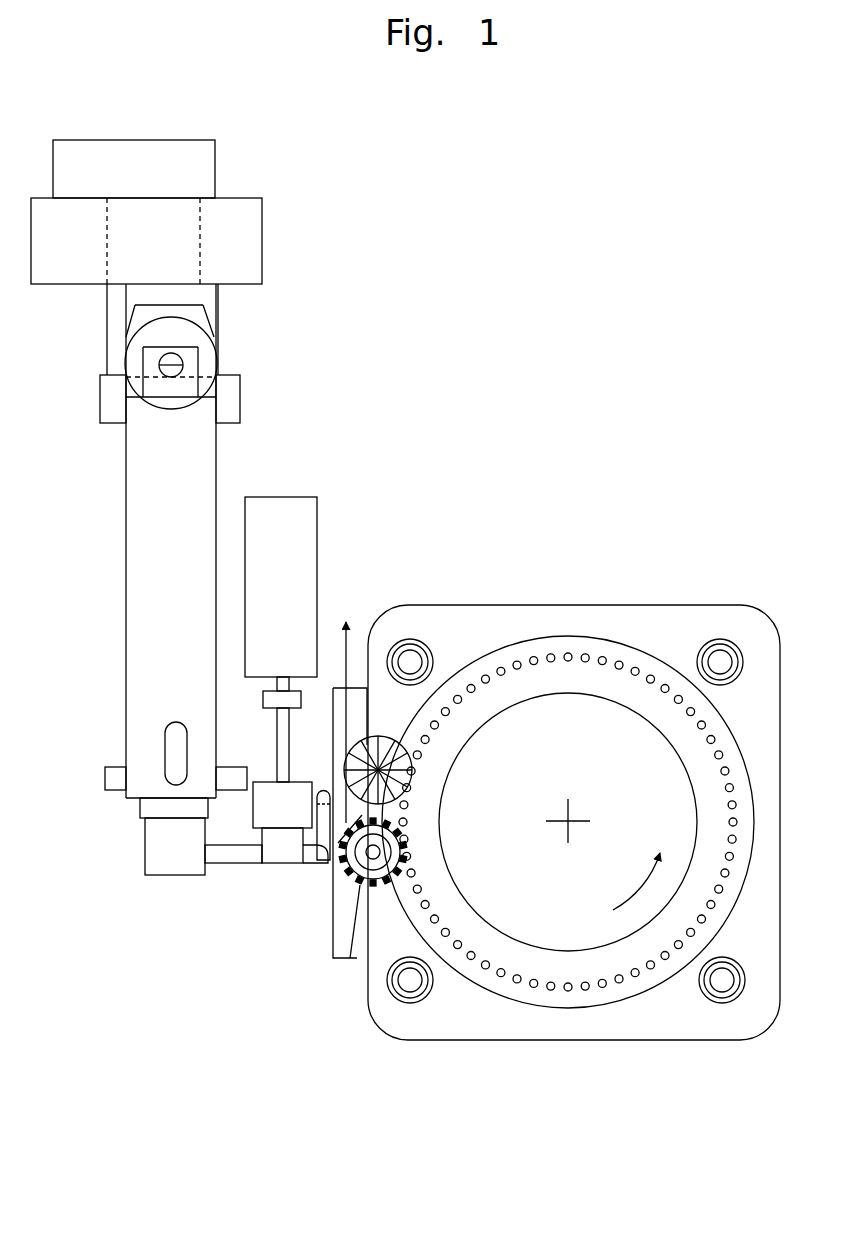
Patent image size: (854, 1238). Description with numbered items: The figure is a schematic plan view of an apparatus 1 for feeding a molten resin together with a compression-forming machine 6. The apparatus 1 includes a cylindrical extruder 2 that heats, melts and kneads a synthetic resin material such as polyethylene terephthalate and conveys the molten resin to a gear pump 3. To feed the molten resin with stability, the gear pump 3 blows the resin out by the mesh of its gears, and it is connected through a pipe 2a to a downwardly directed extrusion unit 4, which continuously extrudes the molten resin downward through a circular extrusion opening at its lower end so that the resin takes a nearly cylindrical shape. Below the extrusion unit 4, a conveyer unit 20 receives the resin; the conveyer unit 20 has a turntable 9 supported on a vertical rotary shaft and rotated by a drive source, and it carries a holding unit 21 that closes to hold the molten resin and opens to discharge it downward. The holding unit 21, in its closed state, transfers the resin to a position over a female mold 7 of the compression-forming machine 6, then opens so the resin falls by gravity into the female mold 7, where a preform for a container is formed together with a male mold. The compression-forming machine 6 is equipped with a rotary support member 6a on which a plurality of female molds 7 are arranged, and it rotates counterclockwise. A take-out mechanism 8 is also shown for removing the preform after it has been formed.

The apparatus for feeding a molten resin 1 is at (356, 455).
The extruder 2 is at (118, 585).
The pipe 2a is at (318, 868).
The gear pump 3 is at (262, 868).
The extrusion unit 4 is at (322, 784).
The compression-forming machine 6 is at (676, 644).
The rotary support member 6a is at (592, 635).
The female mold 7 is at (422, 813).
The take-out mechanism 8 is at (378, 732).
The turntable 9 is at (350, 958).
The conveyer unit 20 is at (355, 1008).
The holding unit 21 is at (332, 918).